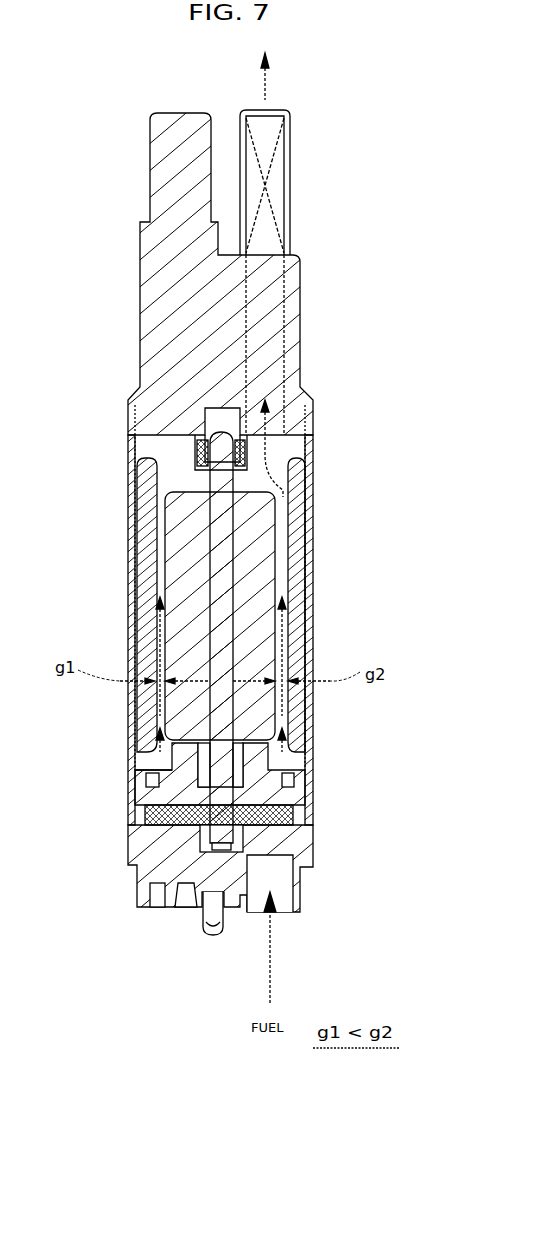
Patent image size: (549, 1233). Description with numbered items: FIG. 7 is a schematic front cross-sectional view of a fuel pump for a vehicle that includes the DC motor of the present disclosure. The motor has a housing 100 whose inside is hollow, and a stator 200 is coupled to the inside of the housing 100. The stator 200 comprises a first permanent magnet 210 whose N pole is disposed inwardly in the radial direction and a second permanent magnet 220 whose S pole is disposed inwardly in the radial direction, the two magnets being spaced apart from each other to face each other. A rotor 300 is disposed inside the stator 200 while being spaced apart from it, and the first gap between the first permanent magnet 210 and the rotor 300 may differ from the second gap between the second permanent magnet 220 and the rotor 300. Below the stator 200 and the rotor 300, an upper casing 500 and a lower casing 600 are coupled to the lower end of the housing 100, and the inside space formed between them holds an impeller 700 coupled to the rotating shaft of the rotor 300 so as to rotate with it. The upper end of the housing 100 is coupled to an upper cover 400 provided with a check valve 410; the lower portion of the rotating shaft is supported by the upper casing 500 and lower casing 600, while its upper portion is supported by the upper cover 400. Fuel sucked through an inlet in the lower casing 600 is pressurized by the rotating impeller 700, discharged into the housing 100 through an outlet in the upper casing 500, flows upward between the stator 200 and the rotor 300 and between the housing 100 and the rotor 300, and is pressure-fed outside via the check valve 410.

The housing 100 is at (300, 478).
The stator 200 is at (231, 701).
The first permanent magnet 210 is at (147, 536).
The second permanent magnet 220 is at (305, 606).
The rotor 300 is at (258, 550).
The upper cover 400 is at (170, 258).
The check valve 410 is at (270, 183).
The upper casing 500 is at (305, 790).
The lower casing 600 is at (313, 852).
The impeller 700 is at (300, 820).